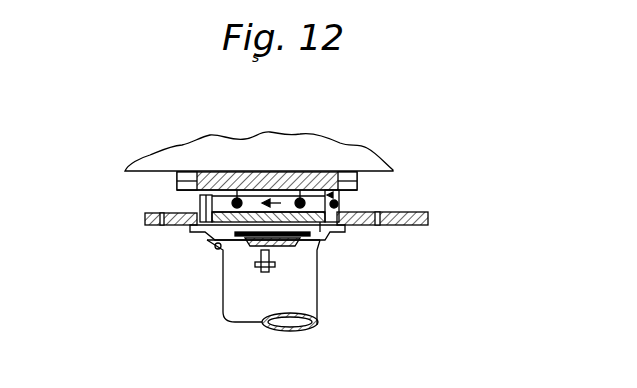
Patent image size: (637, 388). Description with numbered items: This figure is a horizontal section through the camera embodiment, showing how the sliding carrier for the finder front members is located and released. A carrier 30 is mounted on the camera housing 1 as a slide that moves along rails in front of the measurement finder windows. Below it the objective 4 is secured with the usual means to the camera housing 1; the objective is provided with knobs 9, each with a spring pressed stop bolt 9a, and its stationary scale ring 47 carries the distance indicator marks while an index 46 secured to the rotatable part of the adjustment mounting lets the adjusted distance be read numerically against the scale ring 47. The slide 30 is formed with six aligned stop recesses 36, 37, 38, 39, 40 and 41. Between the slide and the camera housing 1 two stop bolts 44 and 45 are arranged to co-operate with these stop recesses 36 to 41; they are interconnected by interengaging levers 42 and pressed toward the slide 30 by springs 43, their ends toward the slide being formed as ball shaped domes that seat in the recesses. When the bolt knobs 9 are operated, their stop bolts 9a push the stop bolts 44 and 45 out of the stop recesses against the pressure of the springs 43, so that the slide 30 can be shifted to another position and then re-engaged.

The camera housing 1 is at (190, 158).
The objective 4 is at (305, 290).
The knob 9 is at (262, 272).
The stop bolt 9a is at (296, 300).
The carrier 30 is at (415, 226).
The stop recess 36 is at (378, 226).
The stop recess 37 is at (331, 223).
The stop recess 38 is at (286, 194).
The stop recess 39 is at (248, 192).
The stop recess 40 is at (199, 229).
The stop recess 41 is at (162, 227).
The interengaging lever 42 is at (305, 200).
The spring 43 is at (341, 197).
The stop bolt 44 is at (341, 207).
The stop bolt 45 is at (203, 210).
The index 46 is at (215, 245).
The scale ring 47 is at (213, 234).